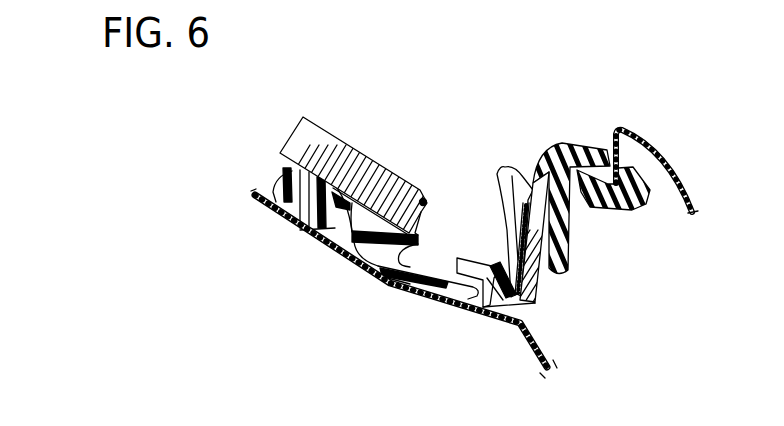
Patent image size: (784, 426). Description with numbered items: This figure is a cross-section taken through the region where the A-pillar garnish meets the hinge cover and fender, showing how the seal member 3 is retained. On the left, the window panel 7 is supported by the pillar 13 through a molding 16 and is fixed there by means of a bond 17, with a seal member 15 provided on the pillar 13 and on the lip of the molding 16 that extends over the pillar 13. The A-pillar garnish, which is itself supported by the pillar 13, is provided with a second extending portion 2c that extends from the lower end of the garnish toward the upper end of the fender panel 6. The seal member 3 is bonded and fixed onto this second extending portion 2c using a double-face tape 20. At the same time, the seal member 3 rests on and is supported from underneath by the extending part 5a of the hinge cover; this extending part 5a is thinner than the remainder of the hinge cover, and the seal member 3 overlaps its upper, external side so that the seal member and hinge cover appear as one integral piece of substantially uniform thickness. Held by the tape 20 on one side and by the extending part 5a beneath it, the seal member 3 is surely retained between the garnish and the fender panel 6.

The window panel 7 is at (357, 177).
The bond 17 is at (293, 222).
The molding 16 is at (367, 258).
The seal member 15 is at (468, 296).
The pillar 13 is at (527, 334).
The double-face tape 20 is at (523, 250).
The second extending portion 2c is at (512, 173).
The seal member 3 is at (579, 148).
The extending part 5a is at (627, 200).
The fender panel 6 is at (668, 164).